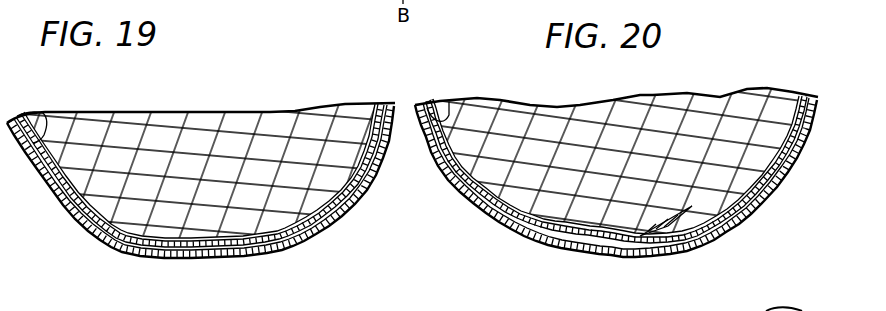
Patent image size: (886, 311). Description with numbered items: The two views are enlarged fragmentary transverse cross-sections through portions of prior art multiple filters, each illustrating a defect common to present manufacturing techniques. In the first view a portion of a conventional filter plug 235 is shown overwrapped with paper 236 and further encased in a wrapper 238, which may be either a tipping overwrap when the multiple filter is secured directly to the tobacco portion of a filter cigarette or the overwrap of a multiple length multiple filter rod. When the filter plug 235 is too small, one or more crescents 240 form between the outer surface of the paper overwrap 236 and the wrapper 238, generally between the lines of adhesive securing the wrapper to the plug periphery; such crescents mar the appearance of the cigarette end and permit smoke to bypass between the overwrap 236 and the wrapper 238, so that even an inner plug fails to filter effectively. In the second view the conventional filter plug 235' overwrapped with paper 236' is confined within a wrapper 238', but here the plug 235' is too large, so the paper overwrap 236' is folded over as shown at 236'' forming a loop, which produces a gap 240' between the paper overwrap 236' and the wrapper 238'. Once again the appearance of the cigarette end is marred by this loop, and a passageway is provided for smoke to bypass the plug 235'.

In FIG. 19, the filter plug 235 is at (200, 162).
In FIG. 19, the paper overwrap 236 is at (61, 111).
In FIG. 19, the wrapper 238 is at (200, 188).
In FIG. 19, the crescent 240 is at (206, 175).
In FIG. 20, the filter plug 235' is at (620, 154).
In FIG. 20, the paper overwrap 236' is at (460, 90).
In FIG. 20, the folded-over portion of paper overwrap 236'' is at (712, 230).
In FIG. 20, the wrapper 238' is at (626, 177).
In FIG. 20, the gap 240' is at (616, 186).